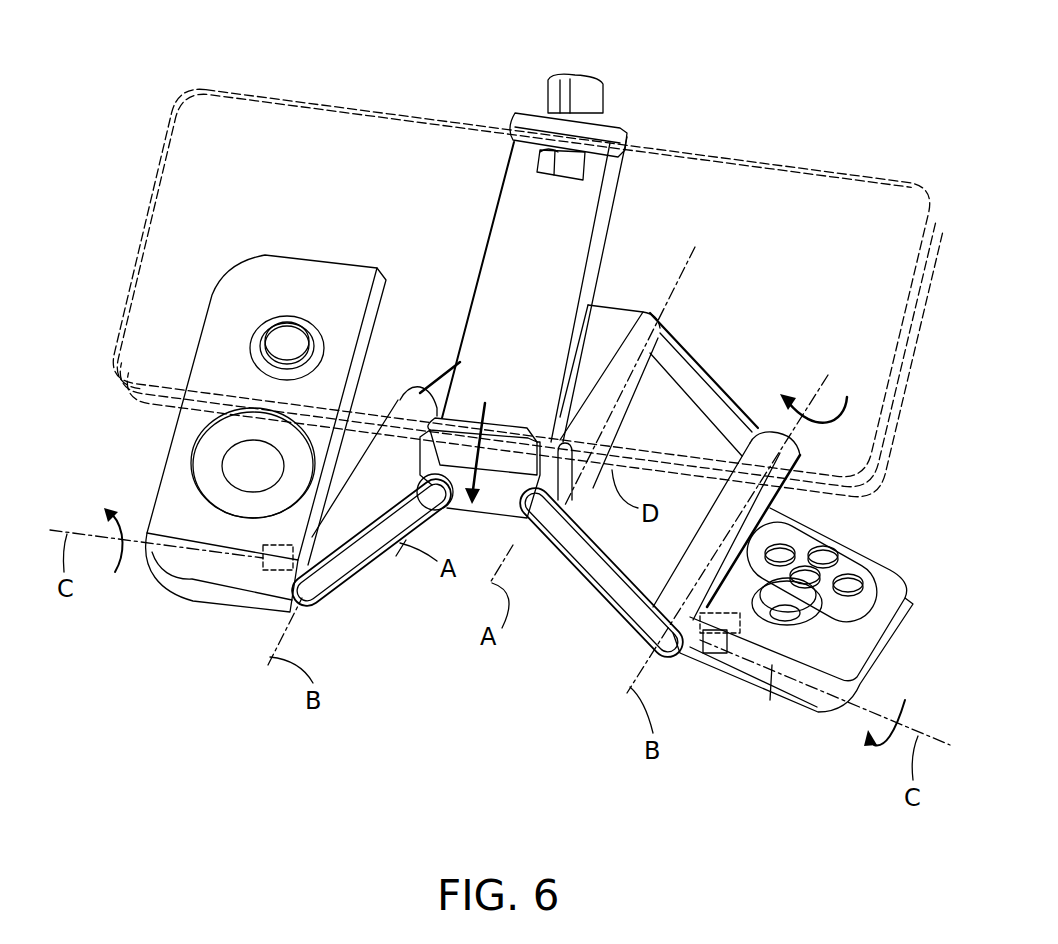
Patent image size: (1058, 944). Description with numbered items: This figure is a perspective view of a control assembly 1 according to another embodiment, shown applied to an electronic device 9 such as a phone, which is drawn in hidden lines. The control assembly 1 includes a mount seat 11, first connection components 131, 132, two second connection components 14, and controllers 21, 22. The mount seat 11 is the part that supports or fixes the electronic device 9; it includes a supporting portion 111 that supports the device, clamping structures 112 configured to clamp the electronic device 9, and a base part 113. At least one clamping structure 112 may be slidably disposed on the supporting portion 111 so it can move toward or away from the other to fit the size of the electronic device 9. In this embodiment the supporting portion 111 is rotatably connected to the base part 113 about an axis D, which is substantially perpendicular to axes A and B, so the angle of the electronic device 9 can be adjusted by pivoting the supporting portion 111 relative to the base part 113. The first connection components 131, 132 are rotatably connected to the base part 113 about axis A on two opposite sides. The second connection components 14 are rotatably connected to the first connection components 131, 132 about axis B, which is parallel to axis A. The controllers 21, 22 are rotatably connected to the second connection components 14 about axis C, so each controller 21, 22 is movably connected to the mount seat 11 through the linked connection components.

The control assembly 1 is at (118, 452).
The electronic device 9 is at (358, 132).
The mount seat 11 is at (599, 262).
The supporting portion 111 is at (626, 178).
The clamping structure 112 is at (568, 88).
The base part 113 is at (612, 330).
The second connection component 14 is at (403, 388).
The controller 21 is at (230, 622).
The controller 22 is at (752, 709).
The first connection component 131 is at (384, 577).
The first connection component 132 is at (586, 593).